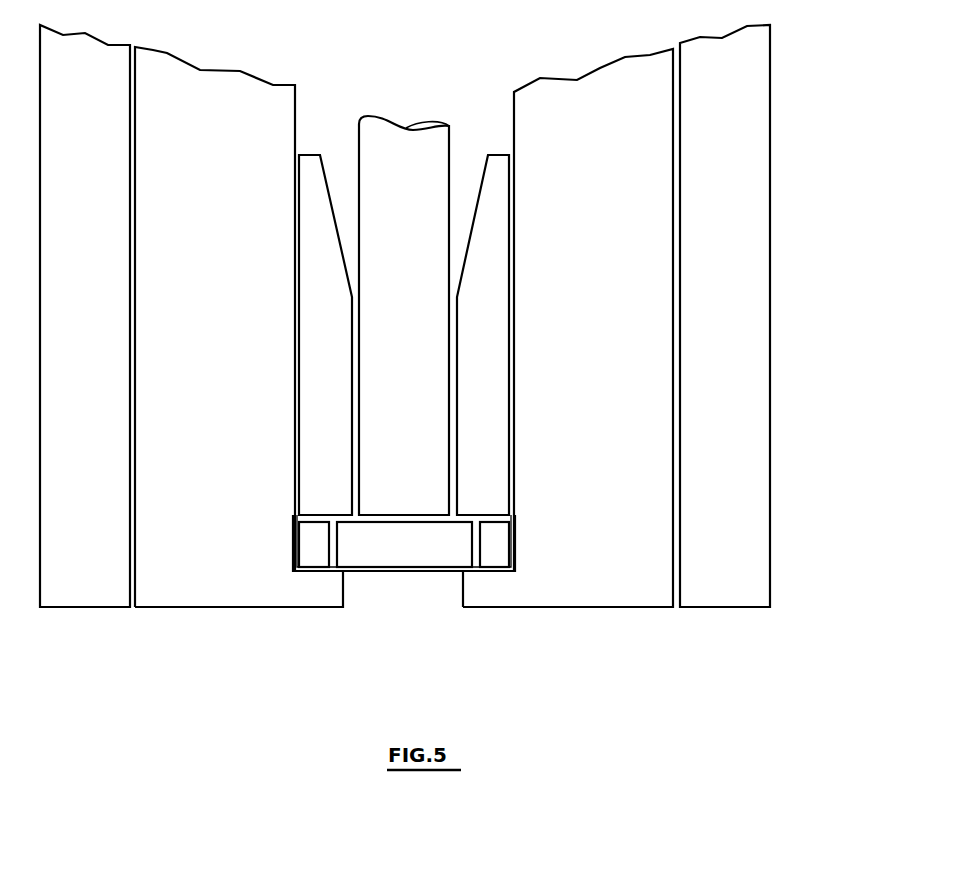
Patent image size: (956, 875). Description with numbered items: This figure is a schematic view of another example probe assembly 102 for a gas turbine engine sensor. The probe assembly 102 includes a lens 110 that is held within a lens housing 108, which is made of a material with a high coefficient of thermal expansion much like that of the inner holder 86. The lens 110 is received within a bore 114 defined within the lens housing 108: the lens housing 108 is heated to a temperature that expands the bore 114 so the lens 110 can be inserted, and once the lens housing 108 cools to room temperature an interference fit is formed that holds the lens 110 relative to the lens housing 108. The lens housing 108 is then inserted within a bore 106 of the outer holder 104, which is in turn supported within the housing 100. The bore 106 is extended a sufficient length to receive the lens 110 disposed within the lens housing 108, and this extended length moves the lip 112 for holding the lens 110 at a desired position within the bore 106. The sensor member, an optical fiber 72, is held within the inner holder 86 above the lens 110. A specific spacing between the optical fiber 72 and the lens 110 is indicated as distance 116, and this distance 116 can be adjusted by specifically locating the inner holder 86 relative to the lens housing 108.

The optical fiber 72 is at (407, 283).
The inner holder 86 is at (477, 358).
The housing 100 is at (732, 458).
The probe assembly 102 is at (793, 170).
The outer holder 104 is at (642, 340).
The bore 106 is at (490, 127).
The lens housing 108 is at (492, 557).
The lens 110 is at (435, 550).
The lip 112 is at (330, 595).
The bore 114 is at (332, 547).
The distance 116 is at (513, 516).